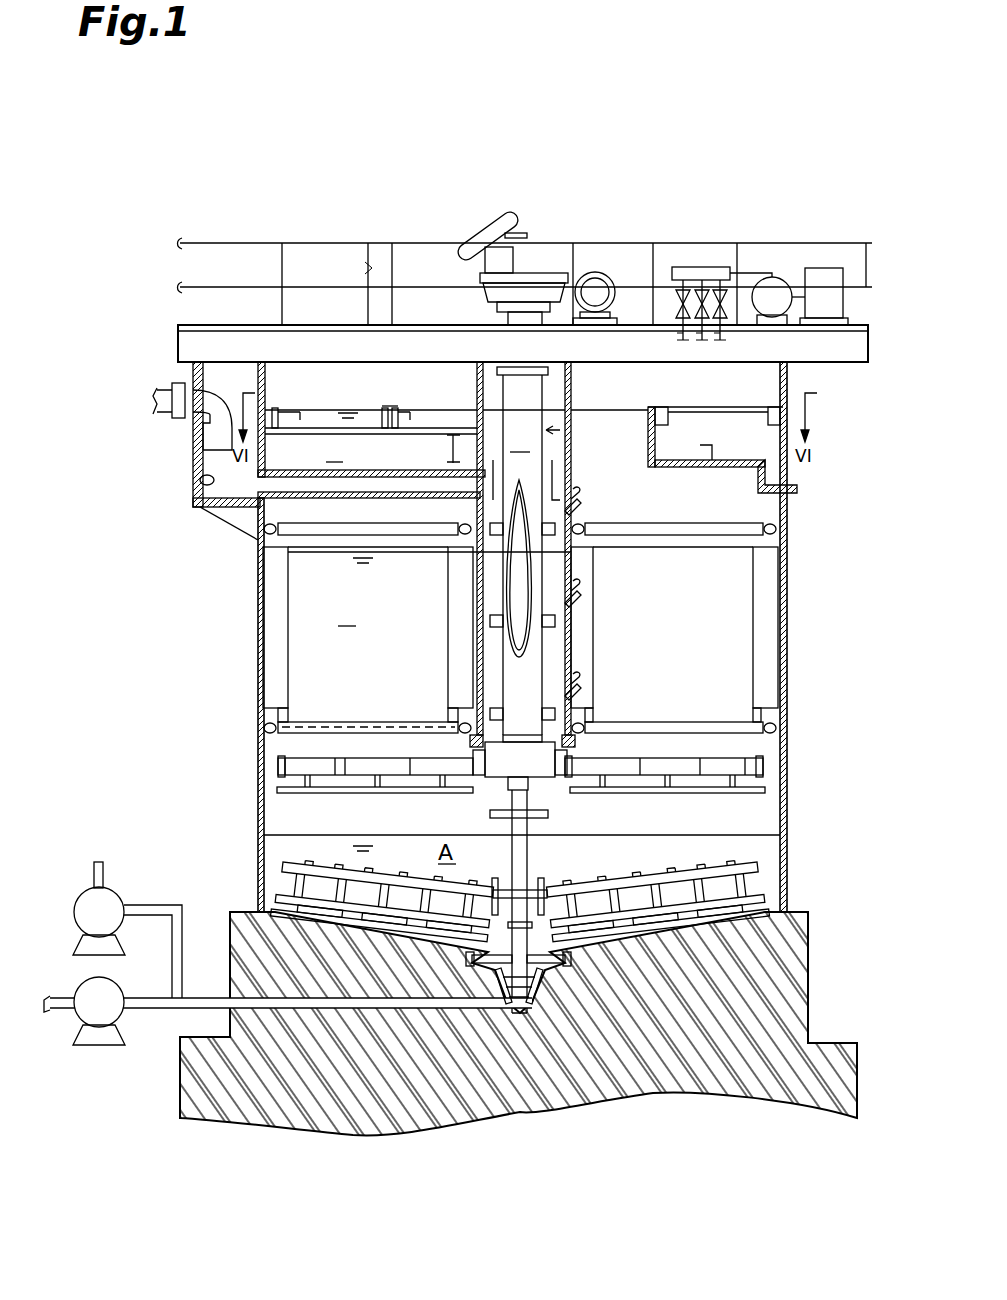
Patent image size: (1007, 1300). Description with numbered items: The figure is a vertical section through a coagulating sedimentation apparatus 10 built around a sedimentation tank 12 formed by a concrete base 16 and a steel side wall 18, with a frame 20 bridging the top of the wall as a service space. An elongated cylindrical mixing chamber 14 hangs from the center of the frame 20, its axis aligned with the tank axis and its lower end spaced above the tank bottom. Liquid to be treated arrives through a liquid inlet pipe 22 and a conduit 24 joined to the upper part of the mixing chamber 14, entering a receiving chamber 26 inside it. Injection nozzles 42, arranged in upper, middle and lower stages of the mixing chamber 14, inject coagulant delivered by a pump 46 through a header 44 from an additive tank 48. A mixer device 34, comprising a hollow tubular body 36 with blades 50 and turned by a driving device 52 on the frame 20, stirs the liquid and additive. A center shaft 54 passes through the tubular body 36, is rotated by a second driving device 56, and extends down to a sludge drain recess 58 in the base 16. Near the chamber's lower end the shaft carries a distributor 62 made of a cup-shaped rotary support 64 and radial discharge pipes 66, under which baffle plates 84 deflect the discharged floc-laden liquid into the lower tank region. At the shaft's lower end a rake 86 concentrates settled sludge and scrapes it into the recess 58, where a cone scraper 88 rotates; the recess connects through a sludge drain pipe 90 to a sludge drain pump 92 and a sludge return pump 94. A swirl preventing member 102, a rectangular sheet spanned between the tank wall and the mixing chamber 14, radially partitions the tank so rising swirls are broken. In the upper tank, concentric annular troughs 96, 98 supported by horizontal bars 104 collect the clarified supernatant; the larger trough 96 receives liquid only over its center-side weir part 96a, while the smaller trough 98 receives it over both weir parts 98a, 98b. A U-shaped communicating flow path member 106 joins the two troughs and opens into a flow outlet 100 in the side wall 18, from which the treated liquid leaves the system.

The sedimentation apparatus 10 is at (826, 136).
The sedimentation tank 12 is at (258, 597).
The mixing chamber 14 is at (572, 395).
The base 16 is at (808, 948).
The side wall 18 is at (788, 668).
The frame 20 is at (188, 342).
The liquid inlet pipe 22 is at (200, 480).
The conduit 24 is at (305, 497).
The receiving chamber 26 is at (560, 470).
The mixer device 34 is at (562, 430).
The tubular body 36 is at (527, 450).
The injection nozzles 42 is at (577, 505).
The header 44 is at (700, 267).
The pump 46 is at (772, 277).
The tank 48 is at (825, 280).
The blades 50 is at (500, 705).
The driving device 52 is at (532, 308).
The center shaft 54 is at (528, 565).
The driving device 56 is at (595, 290).
The sludge drain recess 58 is at (520, 1005).
The distributor 62 is at (372, 752).
The rotary support 64 is at (540, 778).
The discharge pipes 66 is at (680, 770).
The baffle plates 84 is at (300, 790).
The rake 86 is at (700, 872).
The cone scraper 88 is at (478, 1000).
The sludge drain pipe 90 is at (363, 1008).
The sludge drain pump 92 is at (78, 1022).
The sludge return pump 94 is at (82, 900).
The annular trough 96 is at (275, 420).
The weir part 96a is at (293, 418).
The annular trough 98 is at (397, 420).
The weir part 98a is at (410, 418).
The weir part 98b is at (375, 420).
The flow outlet 100 is at (797, 482).
The swirl preventing member 102 is at (305, 652).
The horizontal bars 104 is at (330, 428).
The communicating flow path member 106 is at (705, 455).